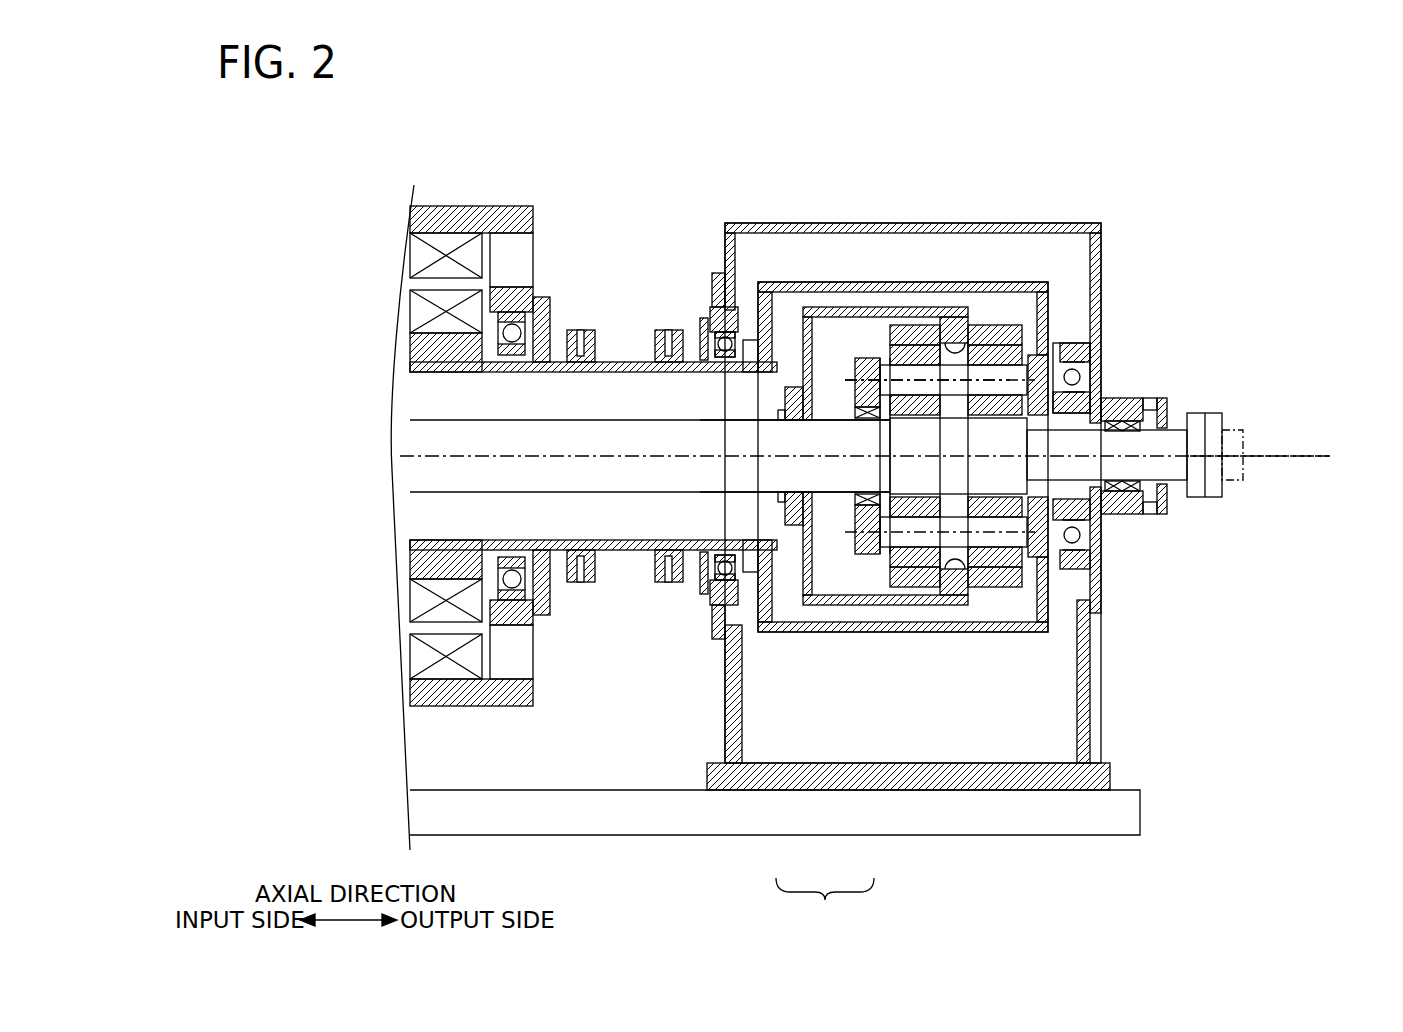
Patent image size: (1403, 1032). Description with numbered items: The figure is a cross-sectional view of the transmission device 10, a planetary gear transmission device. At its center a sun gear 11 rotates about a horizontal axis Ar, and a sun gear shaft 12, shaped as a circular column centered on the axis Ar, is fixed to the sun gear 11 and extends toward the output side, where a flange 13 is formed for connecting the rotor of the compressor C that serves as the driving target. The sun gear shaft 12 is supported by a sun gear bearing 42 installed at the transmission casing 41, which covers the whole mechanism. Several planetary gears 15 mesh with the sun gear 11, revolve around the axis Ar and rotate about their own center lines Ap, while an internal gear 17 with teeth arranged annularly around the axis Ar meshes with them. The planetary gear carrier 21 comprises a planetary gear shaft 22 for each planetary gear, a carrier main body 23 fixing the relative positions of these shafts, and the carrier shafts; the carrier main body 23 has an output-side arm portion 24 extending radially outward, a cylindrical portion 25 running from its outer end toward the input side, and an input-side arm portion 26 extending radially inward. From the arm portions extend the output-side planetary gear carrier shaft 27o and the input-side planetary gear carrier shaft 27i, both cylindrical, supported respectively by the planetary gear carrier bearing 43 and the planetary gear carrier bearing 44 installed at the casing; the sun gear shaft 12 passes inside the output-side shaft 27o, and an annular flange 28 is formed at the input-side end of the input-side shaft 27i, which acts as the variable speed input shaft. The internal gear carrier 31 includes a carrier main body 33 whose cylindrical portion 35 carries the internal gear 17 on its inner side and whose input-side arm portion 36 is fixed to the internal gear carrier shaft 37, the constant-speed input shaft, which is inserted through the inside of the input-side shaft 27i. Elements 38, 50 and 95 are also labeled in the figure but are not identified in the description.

The transmission device 10 is at (1095, 204).
The sun gear 11 is at (917, 445).
The sun gear shaft 12 is at (1175, 473).
The flange 13 is at (1197, 495).
The planetary gears 15 is at (870, 360).
The internal gear 17 is at (1005, 333).
The planetary gear carrier 21 is at (1031, 282).
The planetary gear shaft 22 is at (920, 378).
The carrier main body 23 is at (800, 284).
The output-side arm portion 24 is at (1082, 300).
The cylindrical portion 25 is at (950, 283).
The input-side arm portion 26 is at (760, 300).
The input-side planetary gear carrier shaft 27i is at (719, 338).
The output-side planetary gear carrier shaft 27o is at (1052, 393).
The flange 28 is at (677, 330).
The internal gear carrier 31 is at (747, 473).
The carrier main body 33 is at (825, 910).
The cylindrical portion 35 is at (867, 605).
The input-side arm portion 36 is at (795, 565).
The internal gear carrier shaft 37 is at (733, 588).
The input shaft 38 is at (682, 510).
The transmission casing 41 is at (717, 223).
The sun gear bearing 42 is at (1130, 487).
The planetary gear carrier bearing 43 is at (1082, 377).
The planetary gear carrier bearing 44 is at (716, 288).
The motor stator 50 is at (462, 195).
The rotor sleeve 95 is at (627, 360).
The center line Ap is at (1010, 340).
The axis Ar is at (1270, 456).
The compressor C is at (1223, 418).